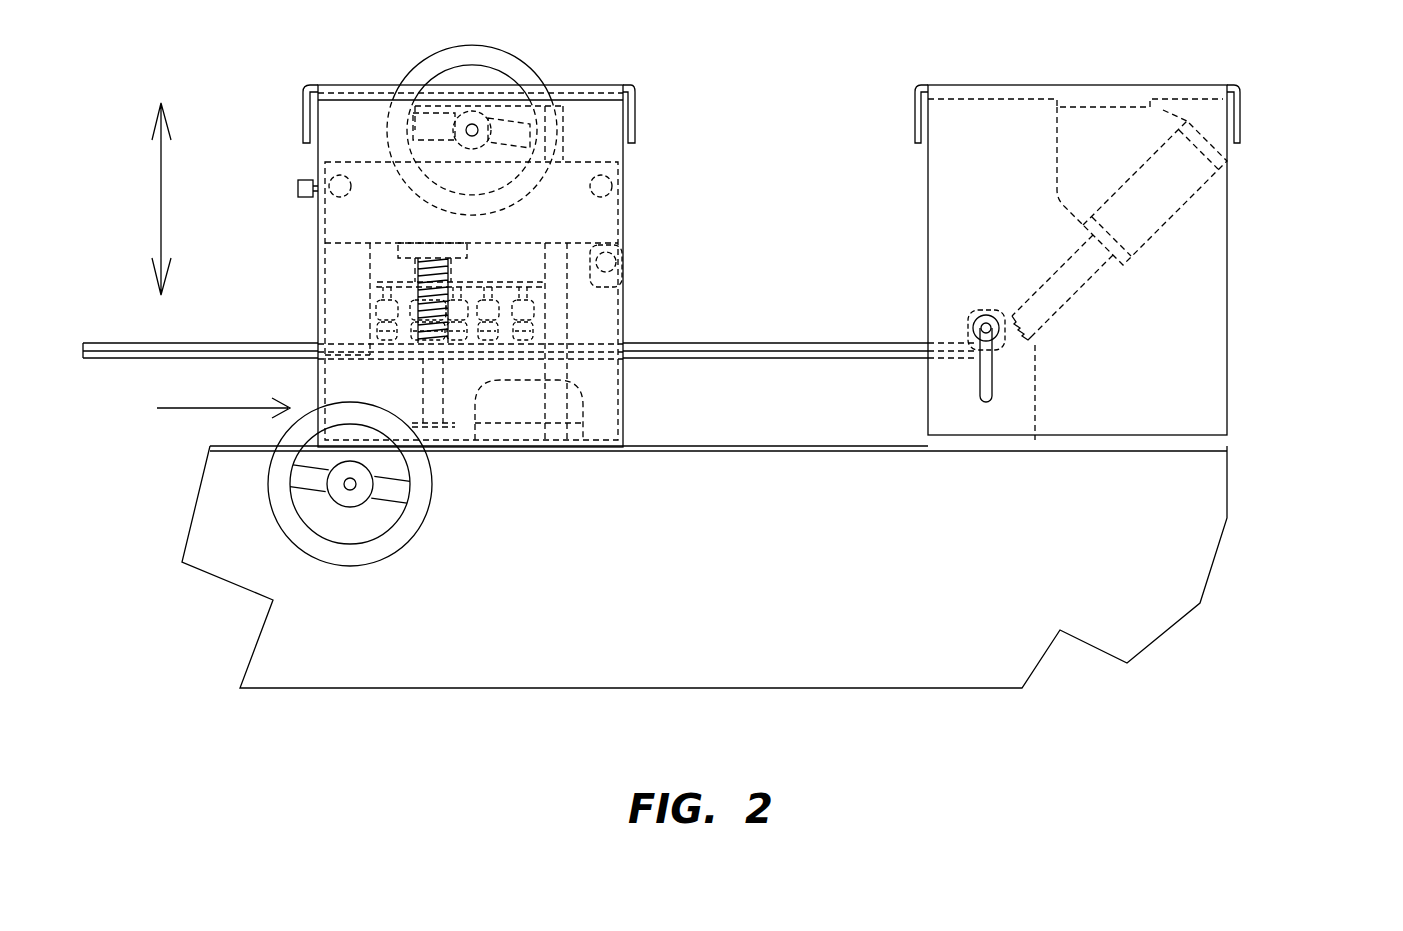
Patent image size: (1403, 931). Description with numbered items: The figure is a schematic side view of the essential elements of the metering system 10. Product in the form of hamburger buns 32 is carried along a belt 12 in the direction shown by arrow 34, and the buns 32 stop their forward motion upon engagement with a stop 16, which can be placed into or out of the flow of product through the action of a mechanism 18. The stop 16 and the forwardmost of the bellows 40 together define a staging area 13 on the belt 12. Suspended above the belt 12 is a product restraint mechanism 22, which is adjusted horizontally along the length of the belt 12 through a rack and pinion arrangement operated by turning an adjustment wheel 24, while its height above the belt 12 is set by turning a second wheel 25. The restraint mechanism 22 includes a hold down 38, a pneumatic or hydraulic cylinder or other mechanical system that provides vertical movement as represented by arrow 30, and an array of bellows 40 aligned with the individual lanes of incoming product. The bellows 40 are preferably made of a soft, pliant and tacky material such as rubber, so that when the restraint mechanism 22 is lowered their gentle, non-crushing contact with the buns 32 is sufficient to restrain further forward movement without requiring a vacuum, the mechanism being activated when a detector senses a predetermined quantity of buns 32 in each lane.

The metering system 10 is at (1253, 330).
The belt 12 is at (673, 450).
The staging area 13 is at (843, 415).
The stop 16 is at (1020, 388).
The mechanism 18 is at (1167, 190).
The product restraint mechanism 22 is at (660, 86).
The adjustment wheel 24 is at (433, 68).
The wheel 25 is at (403, 533).
The arrow 30 is at (160, 200).
The hamburger buns 32 is at (570, 408).
The arrow 34 is at (204, 411).
The hold down 38 is at (478, 258).
The bellows 40 is at (520, 318).